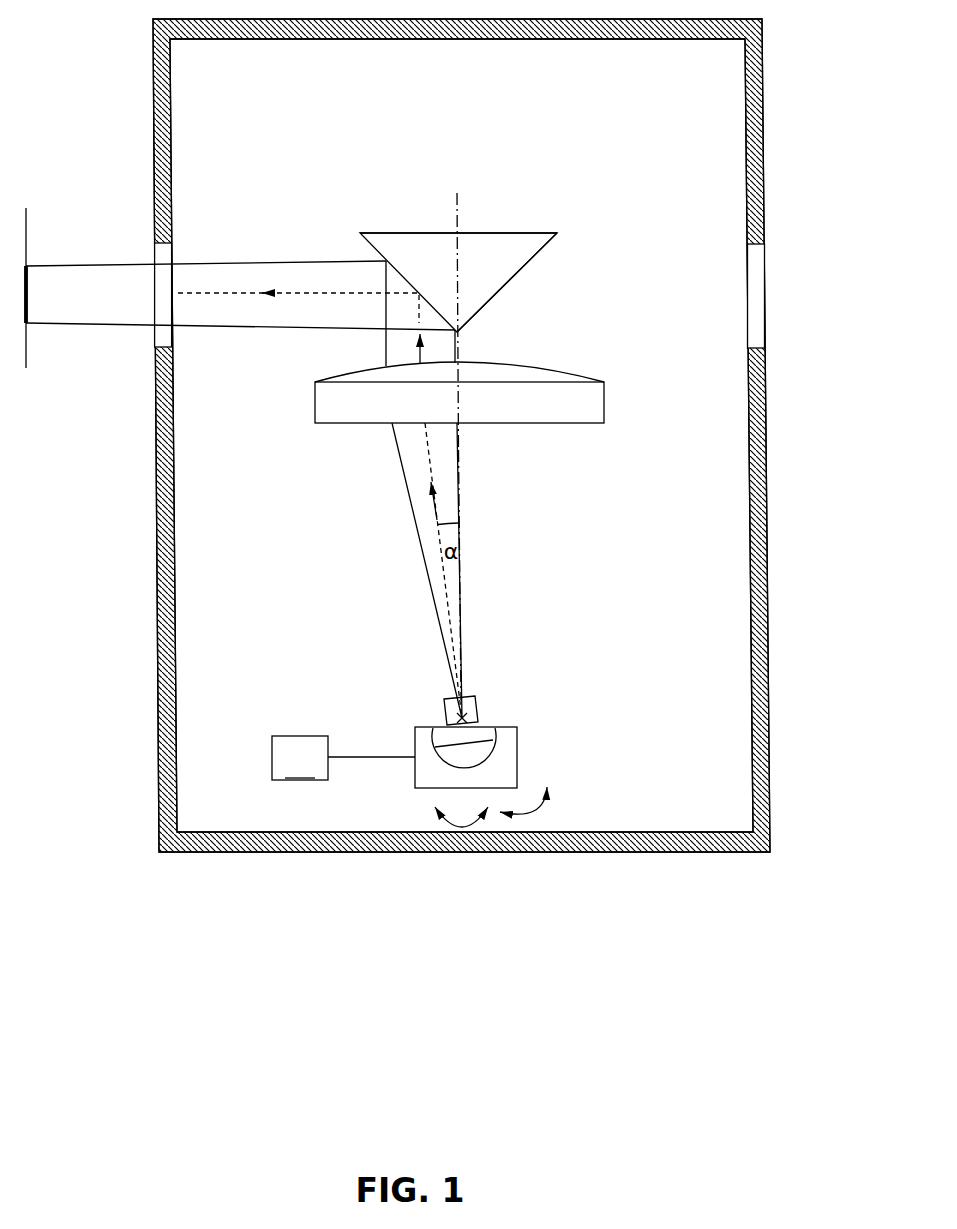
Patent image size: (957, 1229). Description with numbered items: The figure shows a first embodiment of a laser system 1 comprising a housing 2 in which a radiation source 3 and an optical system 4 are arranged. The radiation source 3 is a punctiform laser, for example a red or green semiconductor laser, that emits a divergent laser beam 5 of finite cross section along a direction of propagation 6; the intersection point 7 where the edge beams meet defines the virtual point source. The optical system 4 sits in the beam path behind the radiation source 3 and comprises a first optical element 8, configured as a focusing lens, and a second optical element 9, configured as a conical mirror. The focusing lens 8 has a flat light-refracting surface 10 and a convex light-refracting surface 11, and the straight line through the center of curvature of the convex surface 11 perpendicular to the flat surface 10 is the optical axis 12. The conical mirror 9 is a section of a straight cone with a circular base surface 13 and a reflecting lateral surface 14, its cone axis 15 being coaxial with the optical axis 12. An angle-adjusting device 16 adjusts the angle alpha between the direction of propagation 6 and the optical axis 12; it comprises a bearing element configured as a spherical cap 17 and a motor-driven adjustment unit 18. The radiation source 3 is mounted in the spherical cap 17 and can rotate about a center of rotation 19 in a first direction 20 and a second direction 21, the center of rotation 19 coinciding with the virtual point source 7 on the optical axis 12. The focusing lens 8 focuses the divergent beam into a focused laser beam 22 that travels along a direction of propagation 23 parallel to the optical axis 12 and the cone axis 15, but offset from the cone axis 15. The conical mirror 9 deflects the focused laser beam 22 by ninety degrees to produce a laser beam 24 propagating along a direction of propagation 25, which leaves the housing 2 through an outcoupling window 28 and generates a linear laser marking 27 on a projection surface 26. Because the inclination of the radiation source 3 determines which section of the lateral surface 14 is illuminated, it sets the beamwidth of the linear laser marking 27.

The laser system 1 is at (558, 917).
The housing 2 is at (158, 669).
The radiation source 3 is at (486, 684).
The optical system 4 is at (590, 528).
The laser beam 5 is at (432, 599).
The direction of propagation 6 is at (433, 513).
The intersection point 7 is at (443, 713).
The first optical element 8 is at (347, 401).
The second optical element 9 is at (380, 242).
The flat light-refracting surface 10 is at (538, 426).
The convex light-refracting surface 11 is at (540, 366).
The optical axis 12 is at (460, 400).
The circular base surface 13 is at (429, 229).
The reflecting lateral surface 14 is at (539, 259).
The cone axis 15 is at (458, 197).
The angle-adjusting device 16 is at (606, 752).
The spherical cap 17 is at (440, 753).
The motor-driven adjustment unit 18 is at (343, 758).
The center of rotation 19 is at (478, 715).
The first direction 20 is at (333, 560).
The second direction 21 is at (523, 799).
The focused laser beam 22 is at (383, 347).
The direction of propagation 23 is at (425, 343).
The laser beam 24 is at (228, 264).
The direction of propagation 25 is at (287, 288).
The projection surface 26 is at (30, 232).
The linear laser marking 27 is at (30, 296).
The outcoupling window 28 is at (750, 297).